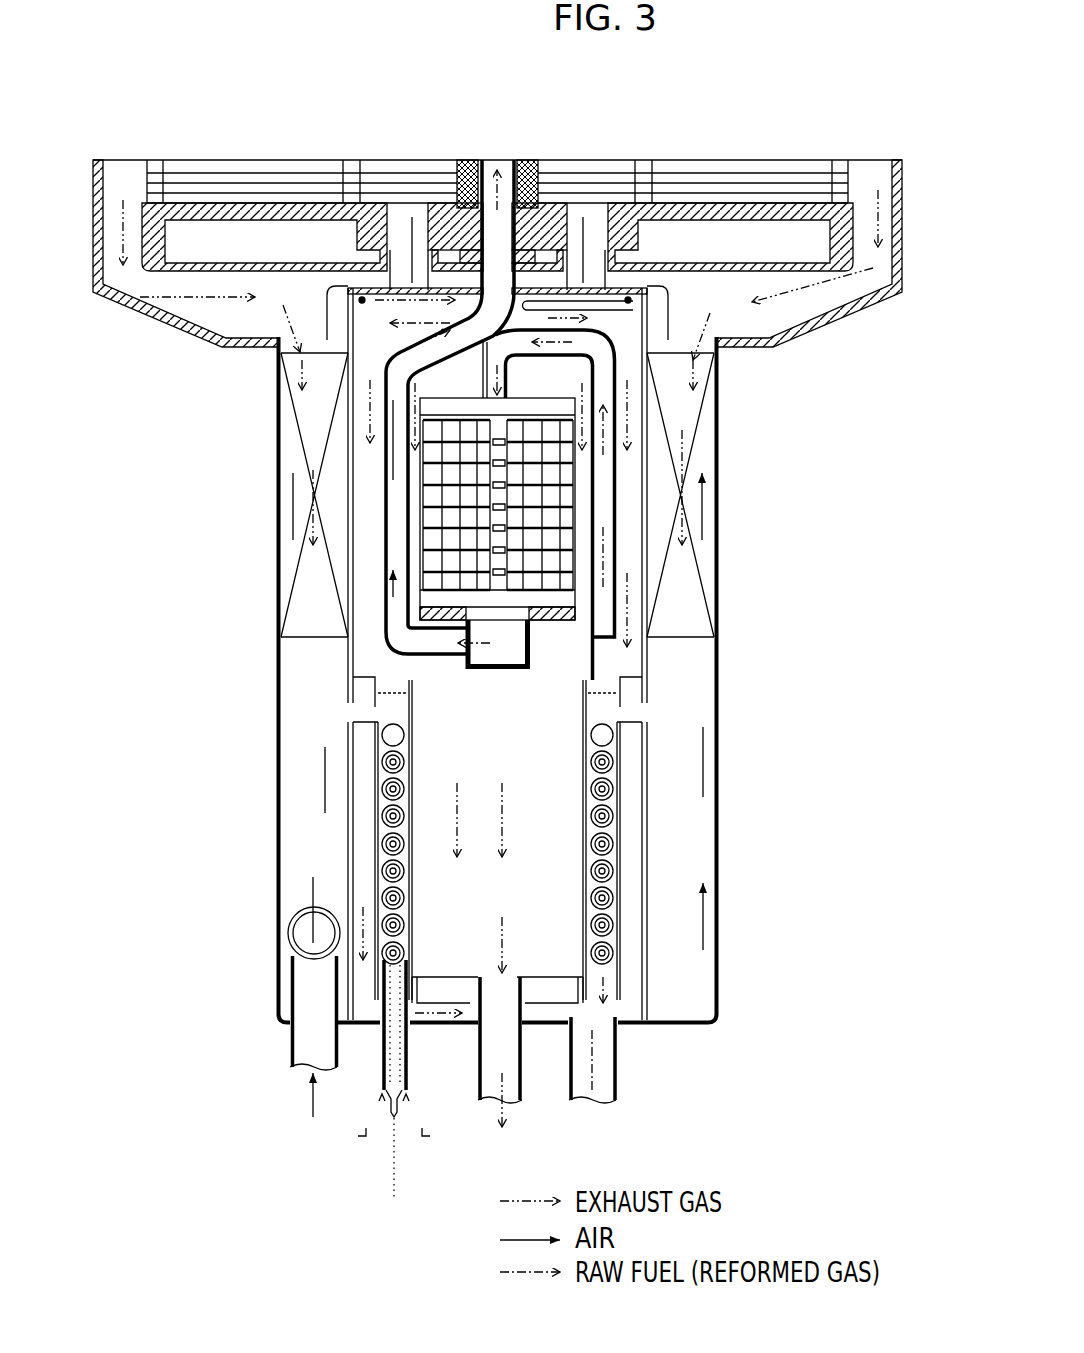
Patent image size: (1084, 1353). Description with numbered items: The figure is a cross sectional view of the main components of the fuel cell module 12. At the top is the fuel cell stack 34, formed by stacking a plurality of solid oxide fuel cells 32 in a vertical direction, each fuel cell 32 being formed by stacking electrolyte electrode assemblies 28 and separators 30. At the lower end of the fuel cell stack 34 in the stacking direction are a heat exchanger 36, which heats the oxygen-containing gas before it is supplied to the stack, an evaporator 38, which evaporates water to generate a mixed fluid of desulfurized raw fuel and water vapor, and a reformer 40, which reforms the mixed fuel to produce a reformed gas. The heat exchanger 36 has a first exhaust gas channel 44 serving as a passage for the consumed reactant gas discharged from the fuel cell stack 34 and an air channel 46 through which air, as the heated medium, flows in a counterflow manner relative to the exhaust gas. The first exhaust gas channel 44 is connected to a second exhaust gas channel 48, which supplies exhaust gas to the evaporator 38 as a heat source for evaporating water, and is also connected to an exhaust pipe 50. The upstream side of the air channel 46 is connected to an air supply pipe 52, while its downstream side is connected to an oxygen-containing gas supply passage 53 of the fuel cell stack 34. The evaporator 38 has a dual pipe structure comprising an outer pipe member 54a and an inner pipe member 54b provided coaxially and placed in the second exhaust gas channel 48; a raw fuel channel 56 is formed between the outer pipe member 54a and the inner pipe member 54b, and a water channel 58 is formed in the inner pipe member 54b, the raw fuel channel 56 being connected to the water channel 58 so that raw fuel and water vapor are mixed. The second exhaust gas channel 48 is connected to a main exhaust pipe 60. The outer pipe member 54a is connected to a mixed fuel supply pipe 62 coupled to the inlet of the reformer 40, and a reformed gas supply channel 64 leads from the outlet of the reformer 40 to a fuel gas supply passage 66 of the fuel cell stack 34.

The fuel cell module 12 is at (318, 94).
The electrolyte electrode assembly 28 is at (754, 158).
The separator 30 is at (806, 158).
The solid oxide fuel cell 32 is at (693, 130).
The fuel cell stack 34 is at (138, 184).
The heat exchanger 36 is at (268, 576).
The evaporator 38 is at (370, 760).
The reformer 40 is at (413, 567).
The first exhaust gas channel 44 is at (300, 448).
The air channel 46 is at (290, 510).
The second exhaust gas channel 48 is at (367, 711).
The exhaust pipe 50 is at (518, 1062).
The air supply pipe 52 is at (317, 1040).
The oxygen-containing gas supply passage 53 is at (376, 158).
The outer pipe member 54a is at (400, 1063).
The inner pipe member 54b is at (404, 1106).
The raw fuel channel 56 is at (410, 954).
The water channel 58 is at (384, 1176).
The main exhaust pipe 60 is at (619, 1074).
The mixed fuel supply pipe 62 is at (617, 527).
The reformed gas supply channel 64 is at (382, 597).
The fuel gas supply passage 66 is at (470, 160).